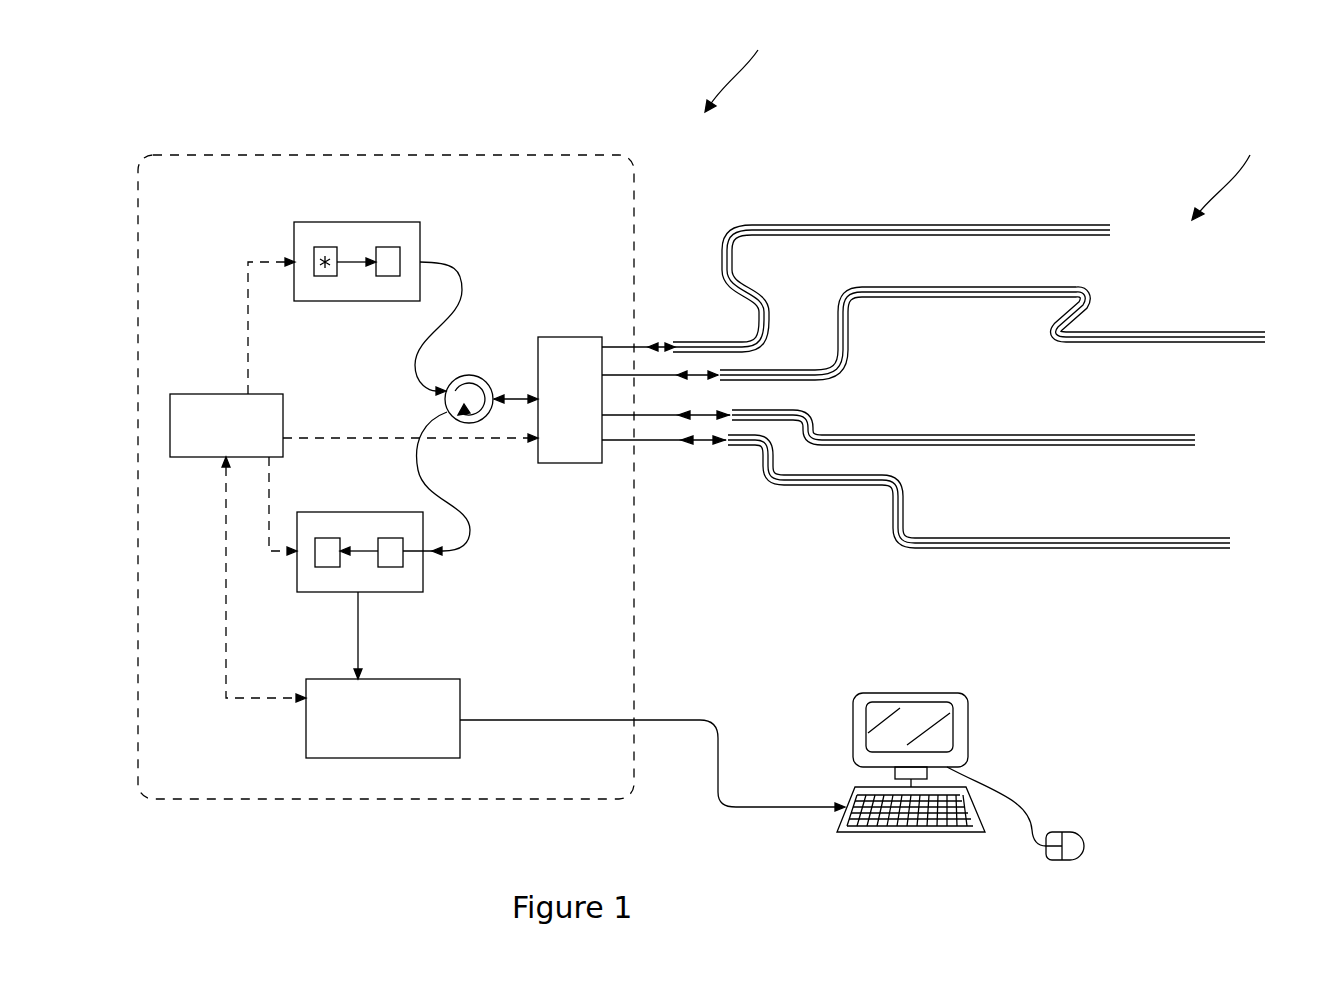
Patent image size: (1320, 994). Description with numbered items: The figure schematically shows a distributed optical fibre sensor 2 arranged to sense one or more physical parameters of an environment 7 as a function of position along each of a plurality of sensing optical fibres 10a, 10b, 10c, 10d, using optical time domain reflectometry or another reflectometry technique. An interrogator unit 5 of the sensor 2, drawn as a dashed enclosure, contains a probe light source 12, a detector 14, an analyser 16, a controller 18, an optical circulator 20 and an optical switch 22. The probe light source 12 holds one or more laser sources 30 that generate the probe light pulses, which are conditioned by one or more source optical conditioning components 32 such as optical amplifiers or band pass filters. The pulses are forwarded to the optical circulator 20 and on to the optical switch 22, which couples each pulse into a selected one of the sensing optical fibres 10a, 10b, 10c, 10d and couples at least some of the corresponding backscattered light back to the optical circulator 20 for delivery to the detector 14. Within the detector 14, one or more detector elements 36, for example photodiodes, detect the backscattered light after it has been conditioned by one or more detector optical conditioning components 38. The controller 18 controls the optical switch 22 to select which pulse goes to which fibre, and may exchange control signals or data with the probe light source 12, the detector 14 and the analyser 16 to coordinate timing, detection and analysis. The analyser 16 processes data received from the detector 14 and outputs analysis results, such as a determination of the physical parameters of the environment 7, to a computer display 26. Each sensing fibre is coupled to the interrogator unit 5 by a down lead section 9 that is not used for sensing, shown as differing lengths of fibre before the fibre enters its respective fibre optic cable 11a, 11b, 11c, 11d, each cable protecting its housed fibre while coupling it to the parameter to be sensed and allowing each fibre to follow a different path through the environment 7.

The distributed optical fibre sensor 2 is at (737, 68).
The interrogator unit 5 is at (453, 155).
The environment 7 is at (1225, 175).
The down lead section 9 is at (643, 346).
The sensing optical fibre 10a is at (896, 227).
The sensing optical fibre 10b is at (962, 296).
The sensing optical fibre 10c is at (960, 436).
The sensing optical fibre 10d is at (990, 547).
The fibre optic cable 11a is at (1045, 227).
The fibre optic cable 11b is at (1086, 292).
The fibre optic cable 11c is at (1043, 435).
The fibre optic cable 11d is at (1030, 539).
The probe light source 12 is at (354, 269).
The detector 14 is at (368, 554).
The analyser 16 is at (340, 758).
The controller 18 is at (201, 458).
The optical circulator 20 is at (474, 376).
The optical switch 22 is at (562, 337).
The computer display 26 is at (968, 719).
The laser source 30 is at (322, 277).
The source optical conditioning component 32 is at (388, 277).
The detector element 36 is at (327, 568).
The detector optical conditioning component 38 is at (393, 568).